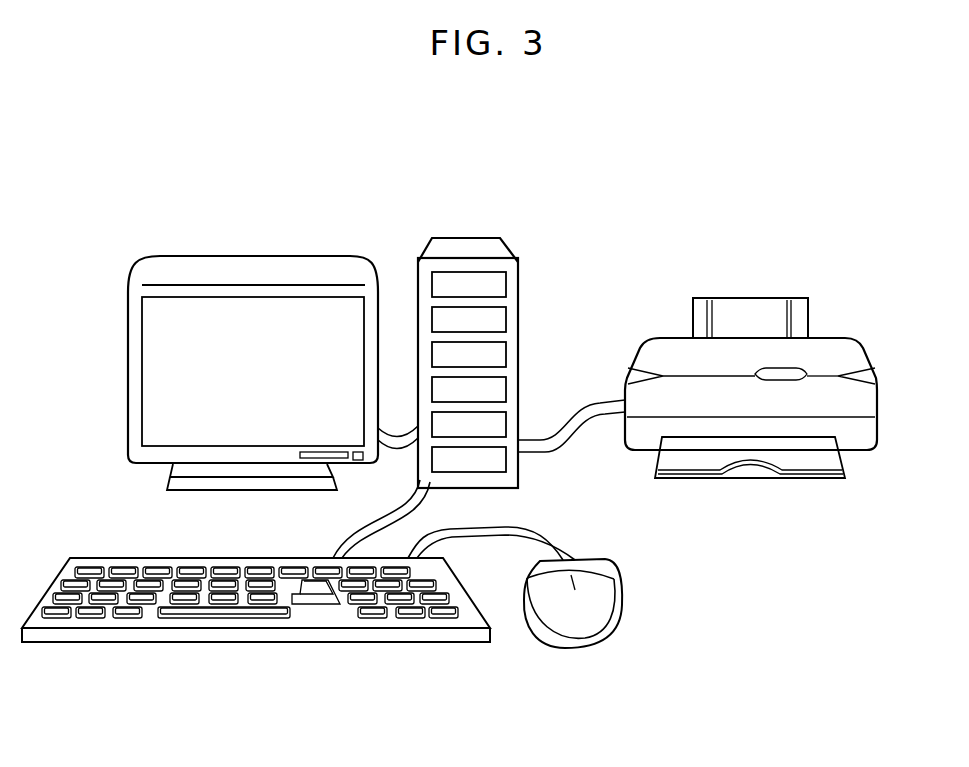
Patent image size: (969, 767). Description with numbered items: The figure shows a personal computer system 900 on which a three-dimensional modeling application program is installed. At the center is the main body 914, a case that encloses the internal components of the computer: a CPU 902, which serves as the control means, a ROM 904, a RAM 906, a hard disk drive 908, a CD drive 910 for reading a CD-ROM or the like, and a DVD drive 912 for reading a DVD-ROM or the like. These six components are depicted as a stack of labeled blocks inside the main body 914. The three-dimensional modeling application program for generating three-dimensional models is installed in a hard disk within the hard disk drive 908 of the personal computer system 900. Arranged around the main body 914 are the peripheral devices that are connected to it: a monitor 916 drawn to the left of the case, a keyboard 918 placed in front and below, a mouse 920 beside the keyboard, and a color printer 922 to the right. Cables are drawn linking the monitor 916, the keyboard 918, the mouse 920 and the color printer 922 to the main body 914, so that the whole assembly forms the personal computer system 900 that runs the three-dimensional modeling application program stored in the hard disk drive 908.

The personal computer system 900 is at (215, 174).
The CPU 902 is at (506, 284).
The ROM 904 is at (506, 319).
The RAM 906 is at (506, 354).
The hard disk drive 908 is at (506, 389).
The CD drive 910 is at (506, 424).
The DVD drive 912 is at (506, 459).
The main body 914 is at (491, 335).
The monitor 916 is at (288, 272).
The keyboard 918 is at (273, 632).
The mouse 920 is at (597, 562).
The color printer 922 is at (833, 352).